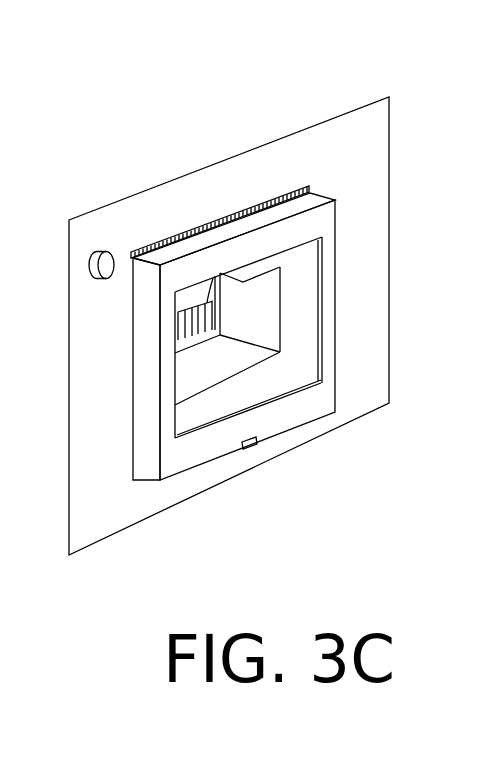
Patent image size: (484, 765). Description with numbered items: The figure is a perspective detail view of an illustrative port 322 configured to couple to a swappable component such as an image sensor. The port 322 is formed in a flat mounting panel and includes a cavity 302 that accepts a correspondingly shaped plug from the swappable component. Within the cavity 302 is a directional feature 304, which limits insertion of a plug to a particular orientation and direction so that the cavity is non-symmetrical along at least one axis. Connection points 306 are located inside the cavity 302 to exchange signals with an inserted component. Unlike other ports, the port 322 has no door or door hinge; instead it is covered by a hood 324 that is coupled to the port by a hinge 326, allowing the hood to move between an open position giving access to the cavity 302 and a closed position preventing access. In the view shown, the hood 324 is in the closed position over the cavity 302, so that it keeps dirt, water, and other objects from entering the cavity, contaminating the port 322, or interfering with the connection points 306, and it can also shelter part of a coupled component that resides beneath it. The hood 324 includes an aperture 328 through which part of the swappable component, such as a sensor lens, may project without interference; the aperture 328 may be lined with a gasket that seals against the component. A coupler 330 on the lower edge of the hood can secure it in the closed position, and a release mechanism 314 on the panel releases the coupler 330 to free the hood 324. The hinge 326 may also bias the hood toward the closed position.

The port 322 is at (131, 152).
The release mechanism 314 is at (92, 264).
The hood 324 is at (325, 398).
The hinge 326 is at (227, 213).
The aperture 328 is at (322, 384).
The cavity 302 is at (270, 286).
The directional feature 304 is at (243, 282).
The connection points 306 is at (193, 328).
The coupler 330 is at (250, 448).